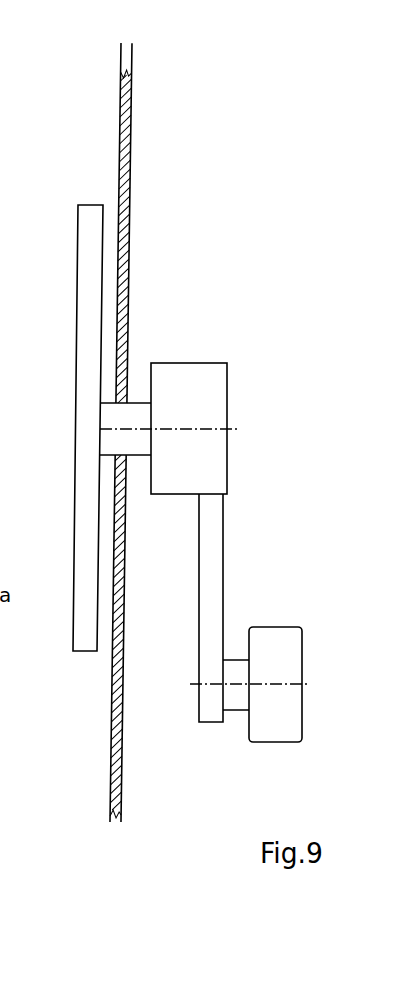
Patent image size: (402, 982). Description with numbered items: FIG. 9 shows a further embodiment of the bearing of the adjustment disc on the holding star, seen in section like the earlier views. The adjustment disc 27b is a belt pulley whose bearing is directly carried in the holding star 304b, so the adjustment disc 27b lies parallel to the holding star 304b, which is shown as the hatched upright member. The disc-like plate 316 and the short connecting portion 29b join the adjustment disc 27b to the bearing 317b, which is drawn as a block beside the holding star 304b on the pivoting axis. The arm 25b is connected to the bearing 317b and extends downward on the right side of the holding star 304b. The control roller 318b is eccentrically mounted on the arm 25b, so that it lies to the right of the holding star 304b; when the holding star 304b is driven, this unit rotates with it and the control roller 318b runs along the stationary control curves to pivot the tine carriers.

The holding star 304b is at (128, 228).
The adjustment disc 27b is at (53, 428).
The plate member 316 is at (76, 284).
The connecting stem 29b is at (138, 414).
The bearing 317b is at (238, 429).
The arm 25b is at (210, 703).
The control roller 318b is at (285, 650).